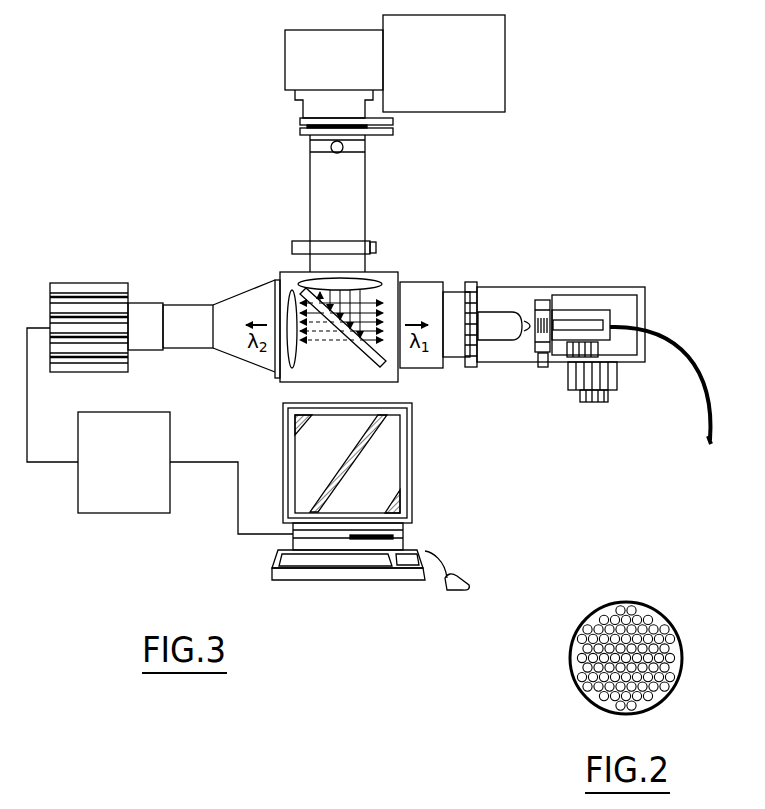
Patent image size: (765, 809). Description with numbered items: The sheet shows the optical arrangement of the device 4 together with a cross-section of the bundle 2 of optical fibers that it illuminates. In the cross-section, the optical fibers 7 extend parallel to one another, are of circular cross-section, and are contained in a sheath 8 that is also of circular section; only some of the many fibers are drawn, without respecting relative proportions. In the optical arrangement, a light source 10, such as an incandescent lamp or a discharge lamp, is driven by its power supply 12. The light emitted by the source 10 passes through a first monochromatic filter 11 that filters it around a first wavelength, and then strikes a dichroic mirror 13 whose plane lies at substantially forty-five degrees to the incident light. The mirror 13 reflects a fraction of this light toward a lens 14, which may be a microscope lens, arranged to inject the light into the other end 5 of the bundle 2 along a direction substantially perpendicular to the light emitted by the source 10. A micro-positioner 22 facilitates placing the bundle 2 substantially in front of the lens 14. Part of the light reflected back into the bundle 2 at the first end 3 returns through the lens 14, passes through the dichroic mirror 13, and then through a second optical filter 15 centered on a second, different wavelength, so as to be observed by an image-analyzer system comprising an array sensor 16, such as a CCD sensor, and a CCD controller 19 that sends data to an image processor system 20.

In FIG. 3, the bundle of optical fibers 2 is at (673, 345).
In FIG. 2, the bundle of optical fibers 2 is at (623, 642).
In FIG. 3, the first end of the bundle 3 is at (708, 448).
In FIG. 3, the device 4 is at (138, 194).
In FIG. 3, the other end of the bundle 5 is at (604, 325).
In FIG. 2, the optical fibers 7 is at (575, 645).
In FIG. 2, the sheath 8 is at (593, 705).
In FIG. 3, the light source 10 is at (293, 63).
In FIG. 3, the first monochromatic filter 11 is at (377, 281).
In FIG. 3, the power supply 12 is at (505, 45).
In FIG. 3, the dichroic mirror 13 is at (384, 362).
In FIG. 3, the lens 14 is at (497, 330).
In FIG. 3, the second optical filter 15 is at (290, 290).
In FIG. 3, the array sensor 16 is at (145, 310).
In FIG. 3, the CCD controller 19 is at (112, 500).
In FIG. 3, the image processor system 20 is at (393, 542).
In FIG. 3, the micro-positioner 22 is at (542, 299).